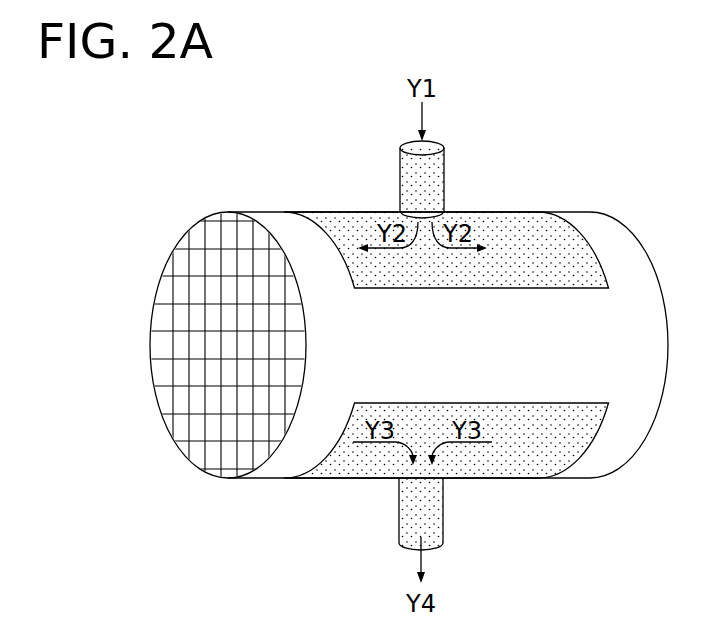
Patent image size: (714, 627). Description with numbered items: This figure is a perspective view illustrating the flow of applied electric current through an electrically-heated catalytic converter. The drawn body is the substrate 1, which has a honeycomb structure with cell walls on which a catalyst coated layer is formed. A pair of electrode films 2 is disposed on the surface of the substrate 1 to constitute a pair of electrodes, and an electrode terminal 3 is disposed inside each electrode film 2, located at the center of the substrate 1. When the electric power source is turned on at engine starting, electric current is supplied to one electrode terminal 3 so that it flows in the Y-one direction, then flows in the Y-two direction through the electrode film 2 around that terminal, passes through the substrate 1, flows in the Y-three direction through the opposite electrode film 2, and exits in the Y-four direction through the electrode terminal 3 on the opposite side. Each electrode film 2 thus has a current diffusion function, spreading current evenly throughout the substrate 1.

The substrate 1 is at (282, 222).
The electrode film 2 is at (355, 232).
The electrode terminal 3 is at (432, 178).